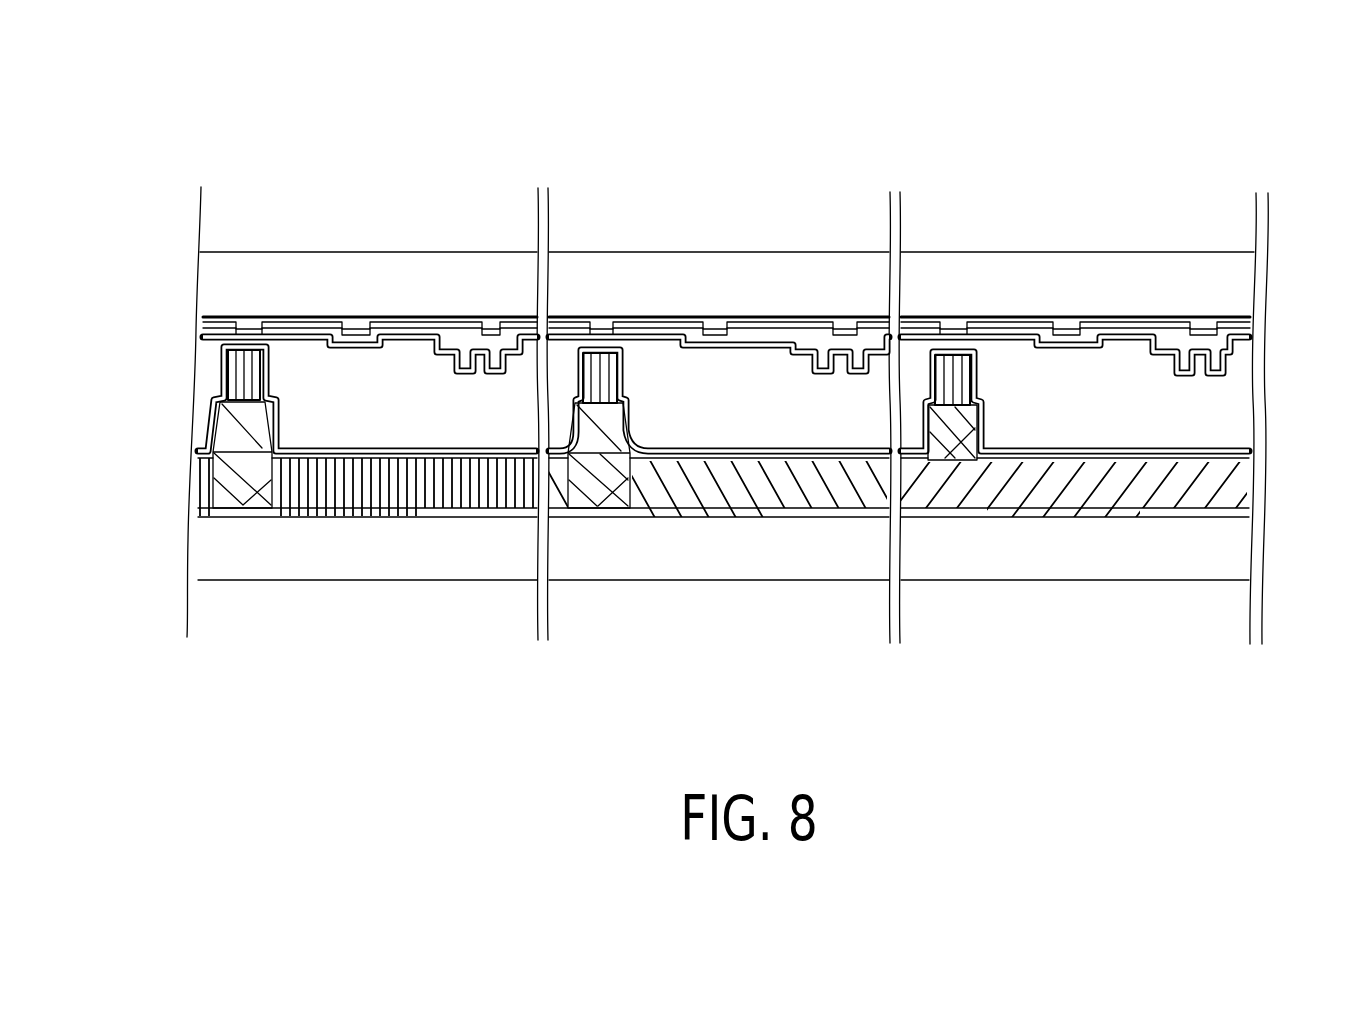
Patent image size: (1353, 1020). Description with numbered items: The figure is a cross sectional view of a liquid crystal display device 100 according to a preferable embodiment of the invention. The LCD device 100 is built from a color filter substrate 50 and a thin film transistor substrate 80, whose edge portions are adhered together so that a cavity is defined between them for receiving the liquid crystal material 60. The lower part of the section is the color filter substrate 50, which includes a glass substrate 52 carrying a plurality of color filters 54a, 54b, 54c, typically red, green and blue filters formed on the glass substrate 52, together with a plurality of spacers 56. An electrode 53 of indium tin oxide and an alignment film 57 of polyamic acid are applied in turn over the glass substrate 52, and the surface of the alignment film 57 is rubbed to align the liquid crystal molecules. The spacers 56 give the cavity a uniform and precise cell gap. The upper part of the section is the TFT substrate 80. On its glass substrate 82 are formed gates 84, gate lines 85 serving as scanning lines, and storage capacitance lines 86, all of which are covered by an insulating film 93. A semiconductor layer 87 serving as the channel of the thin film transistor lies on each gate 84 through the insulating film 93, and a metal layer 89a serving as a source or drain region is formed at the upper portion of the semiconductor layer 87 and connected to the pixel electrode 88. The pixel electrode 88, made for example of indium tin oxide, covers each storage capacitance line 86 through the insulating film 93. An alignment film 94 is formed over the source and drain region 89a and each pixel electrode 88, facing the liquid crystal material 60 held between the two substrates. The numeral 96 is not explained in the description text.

The liquid crystal display device 100 is at (1148, 128).
The color filter substrate 50 is at (1280, 463).
The glass substrate 52 is at (1143, 565).
The electrode 53 is at (1148, 460).
The color filter 54a is at (257, 500).
The color filter 54b is at (237, 417).
The color filter 54c is at (642, 322).
The spacer 56 is at (300, 350).
The alignment film 57 is at (1080, 452).
The liquid crystal material 60 is at (1236, 416).
The thin film transistor substrate 80 is at (1280, 257).
The glass substrate 82 is at (1023, 278).
The gate 84 is at (821, 335).
The gate line 85 is at (593, 327).
The storage capacitance line 86 is at (713, 327).
The semiconductor layer 87 is at (804, 325).
The pixel electrode 88 is at (737, 322).
The metal layer 89a is at (542, 305).
The insulating film 93 is at (600, 363).
The alignment film 94 is at (264, 322).
The insulating layer 96 is at (457, 330).